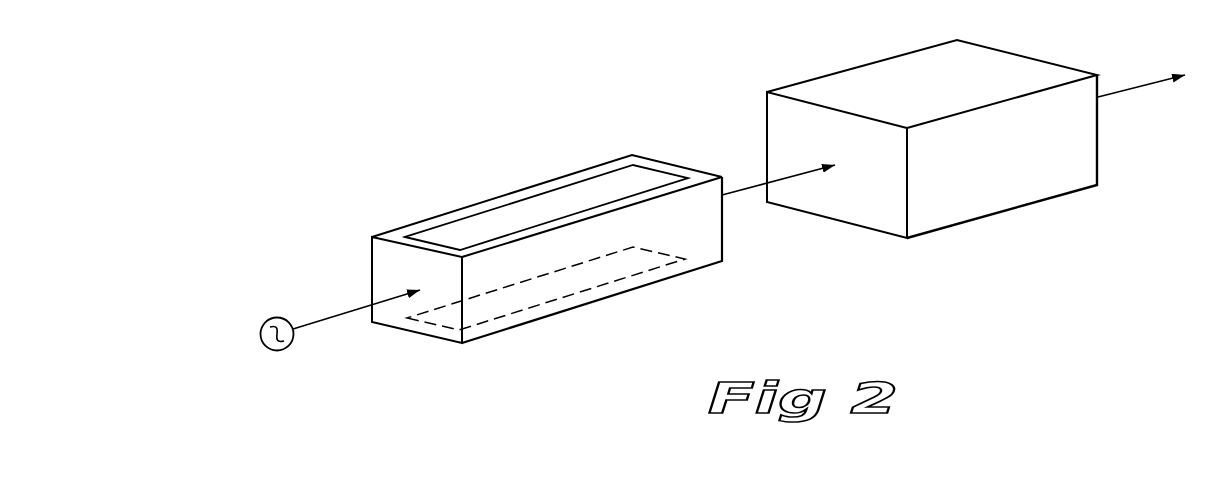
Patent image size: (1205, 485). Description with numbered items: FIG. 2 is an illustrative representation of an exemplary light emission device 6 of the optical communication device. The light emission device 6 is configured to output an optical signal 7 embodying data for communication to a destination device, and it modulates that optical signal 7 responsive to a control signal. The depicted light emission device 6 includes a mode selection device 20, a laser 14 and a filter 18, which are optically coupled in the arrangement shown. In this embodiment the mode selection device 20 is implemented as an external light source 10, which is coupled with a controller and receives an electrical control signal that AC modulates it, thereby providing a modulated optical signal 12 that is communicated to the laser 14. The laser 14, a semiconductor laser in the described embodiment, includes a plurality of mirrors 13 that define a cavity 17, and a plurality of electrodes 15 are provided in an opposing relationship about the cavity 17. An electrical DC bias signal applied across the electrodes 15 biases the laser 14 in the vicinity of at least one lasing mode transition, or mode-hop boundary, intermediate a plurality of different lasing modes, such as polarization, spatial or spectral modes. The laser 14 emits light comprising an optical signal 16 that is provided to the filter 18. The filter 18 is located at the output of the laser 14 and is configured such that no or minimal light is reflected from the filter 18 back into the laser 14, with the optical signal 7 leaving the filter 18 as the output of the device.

The light emission device 6 is at (335, 110).
The optical signal 7 is at (1150, 82).
The external light source 10 is at (272, 353).
The modulated optical signal 12 is at (352, 308).
The mirrors 13 is at (420, 282).
The laser 14 is at (668, 279).
The electrodes 15 is at (510, 215).
The optical signal 16 is at (777, 182).
The cavity 17 is at (695, 240).
The filter 18 is at (1005, 212).
The mode selection device 20 is at (247, 277).